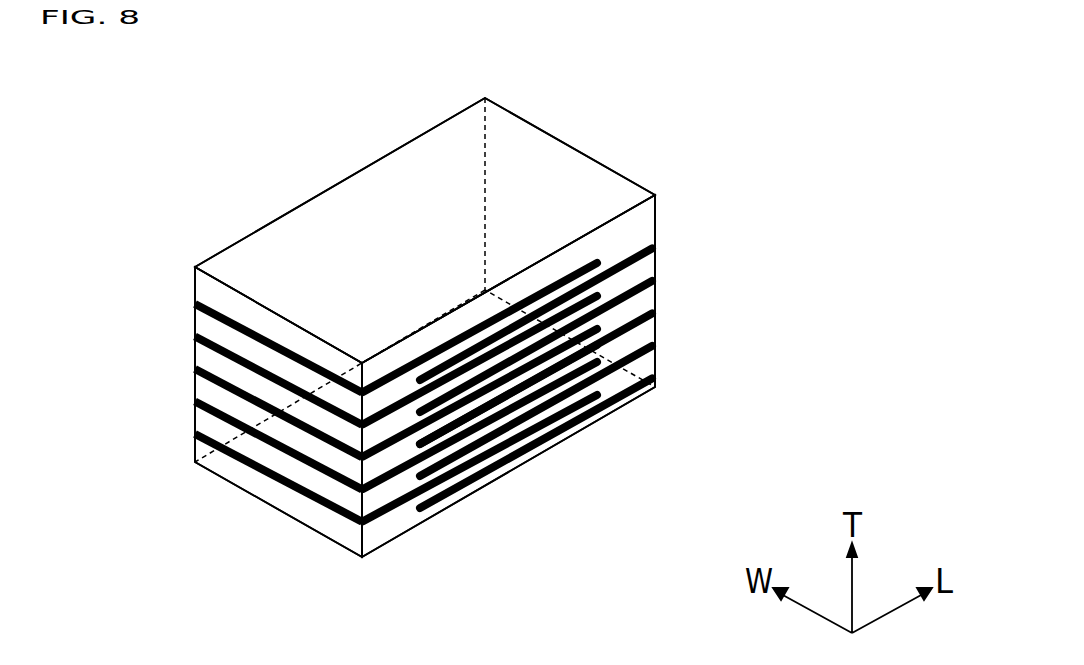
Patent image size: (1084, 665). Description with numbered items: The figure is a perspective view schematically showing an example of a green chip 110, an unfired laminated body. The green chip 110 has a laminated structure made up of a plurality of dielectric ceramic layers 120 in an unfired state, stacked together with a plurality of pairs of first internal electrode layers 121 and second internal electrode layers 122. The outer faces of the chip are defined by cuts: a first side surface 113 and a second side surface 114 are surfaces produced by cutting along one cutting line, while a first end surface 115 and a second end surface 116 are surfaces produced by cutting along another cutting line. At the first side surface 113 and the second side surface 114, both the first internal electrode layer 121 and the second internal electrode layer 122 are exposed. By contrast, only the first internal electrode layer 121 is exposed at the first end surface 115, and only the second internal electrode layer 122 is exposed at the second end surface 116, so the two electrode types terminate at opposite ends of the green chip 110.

The green chip 110 is at (180, 128).
The first side surface 113 is at (327, 228).
The second side surface 114 is at (560, 423).
The first end surface 115 is at (267, 457).
The second end surface 116 is at (550, 177).
The dielectric ceramic layers 120 is at (478, 433).
The first internal electrode layer 121 is at (217, 345).
The second internal electrode layer 122 is at (655, 290).